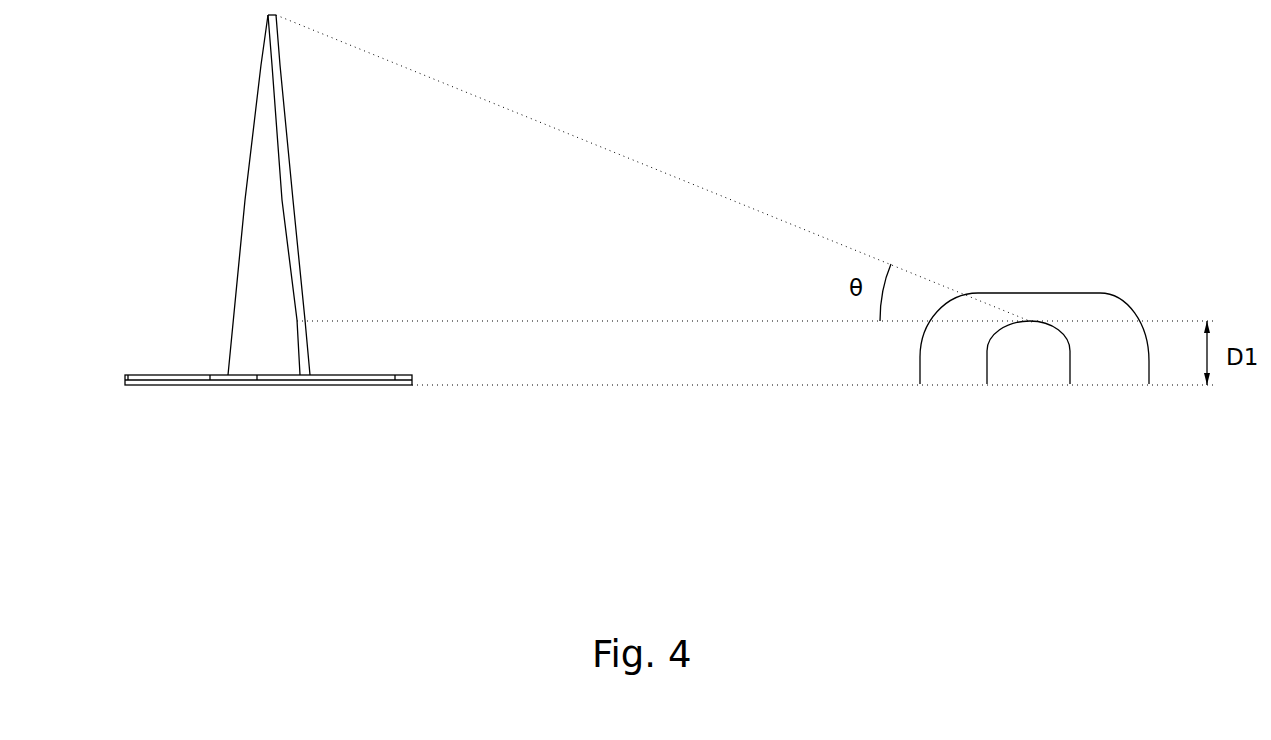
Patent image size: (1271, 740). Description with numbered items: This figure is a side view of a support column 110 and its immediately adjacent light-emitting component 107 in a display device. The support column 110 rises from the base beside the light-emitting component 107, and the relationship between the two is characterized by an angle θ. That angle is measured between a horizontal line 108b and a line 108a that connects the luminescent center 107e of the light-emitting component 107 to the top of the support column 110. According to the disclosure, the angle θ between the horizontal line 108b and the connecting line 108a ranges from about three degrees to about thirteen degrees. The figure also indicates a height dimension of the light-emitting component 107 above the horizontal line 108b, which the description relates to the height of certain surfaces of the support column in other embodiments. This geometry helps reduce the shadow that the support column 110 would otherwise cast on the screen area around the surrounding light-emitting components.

The support column 110 is at (188, 164).
The line connecting luminescent center and top of support column 108a is at (668, 175).
The horizontal line 108b is at (488, 321).
The light-emitting component 107 is at (1167, 278).
The luminescent center 107e is at (1030, 321).